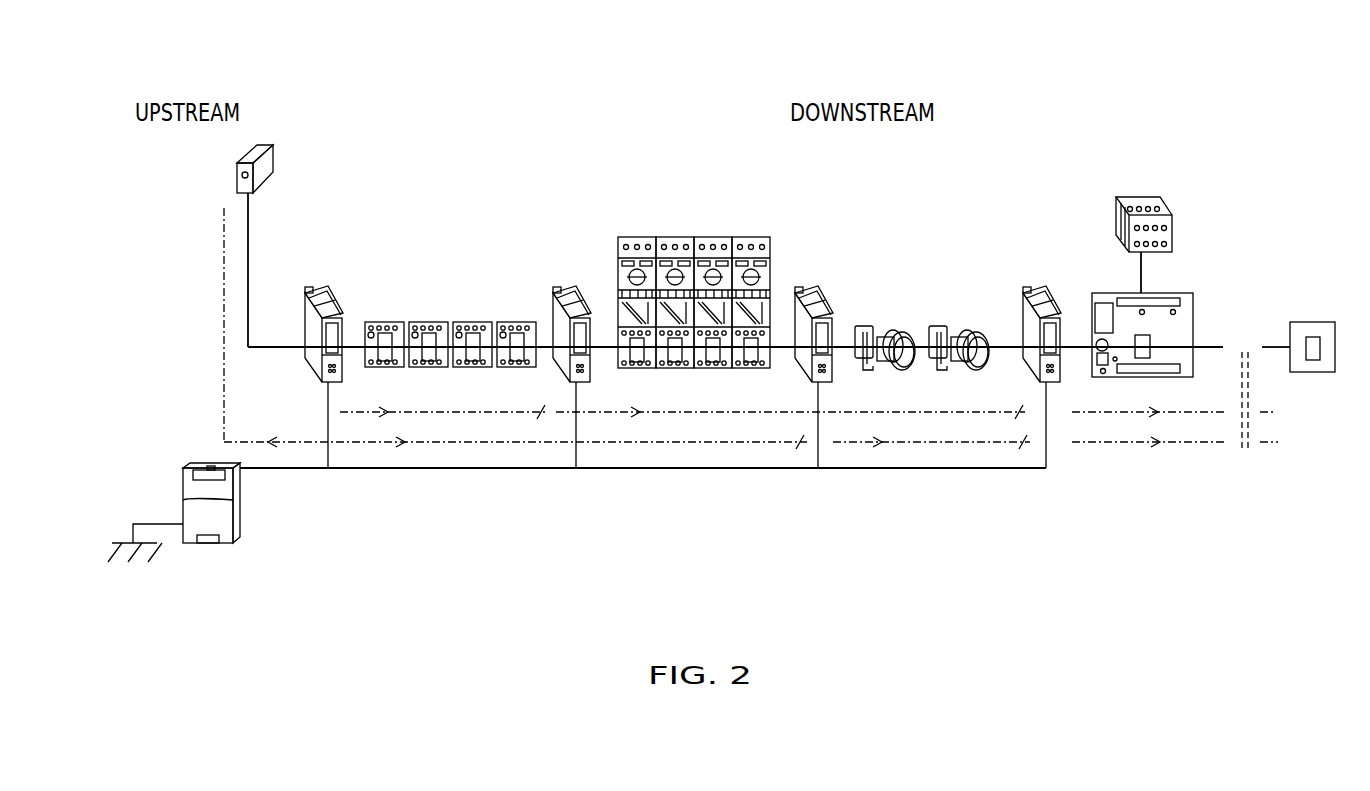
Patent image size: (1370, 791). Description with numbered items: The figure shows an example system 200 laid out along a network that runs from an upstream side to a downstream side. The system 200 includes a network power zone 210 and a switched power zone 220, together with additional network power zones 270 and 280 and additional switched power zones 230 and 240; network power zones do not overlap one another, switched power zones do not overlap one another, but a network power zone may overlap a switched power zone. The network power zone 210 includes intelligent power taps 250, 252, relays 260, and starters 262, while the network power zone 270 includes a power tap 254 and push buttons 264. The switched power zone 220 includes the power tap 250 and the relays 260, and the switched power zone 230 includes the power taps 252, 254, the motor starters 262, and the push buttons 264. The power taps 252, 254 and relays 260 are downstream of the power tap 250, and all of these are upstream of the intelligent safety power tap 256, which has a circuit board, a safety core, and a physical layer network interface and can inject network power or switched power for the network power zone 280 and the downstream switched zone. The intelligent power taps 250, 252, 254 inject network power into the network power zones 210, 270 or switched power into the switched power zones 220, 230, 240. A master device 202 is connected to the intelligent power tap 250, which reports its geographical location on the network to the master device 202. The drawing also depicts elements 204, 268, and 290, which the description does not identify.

The system 200 is at (349, 40).
The master device 202 is at (237, 178).
The power supply 204 is at (207, 545).
The network power zone 210 is at (309, 442).
The switched power zone 220 is at (440, 411).
The switched power zone 230 is at (740, 411).
The switched power zone 240 is at (1128, 411).
The intelligent power tap 250 is at (333, 292).
The power tap 252 is at (580, 292).
The power tap 254 is at (821, 292).
The intelligent safety power tap 256 is at (1049, 292).
The relays 260 is at (514, 320).
The starters 262 is at (690, 237).
The push buttons 264 is at (940, 322).
The connector and controller board 268 is at (1134, 194).
The network power zone 270 is at (928, 445).
The network power zone 280 is at (1114, 445).
The downstream device 290 is at (1316, 322).